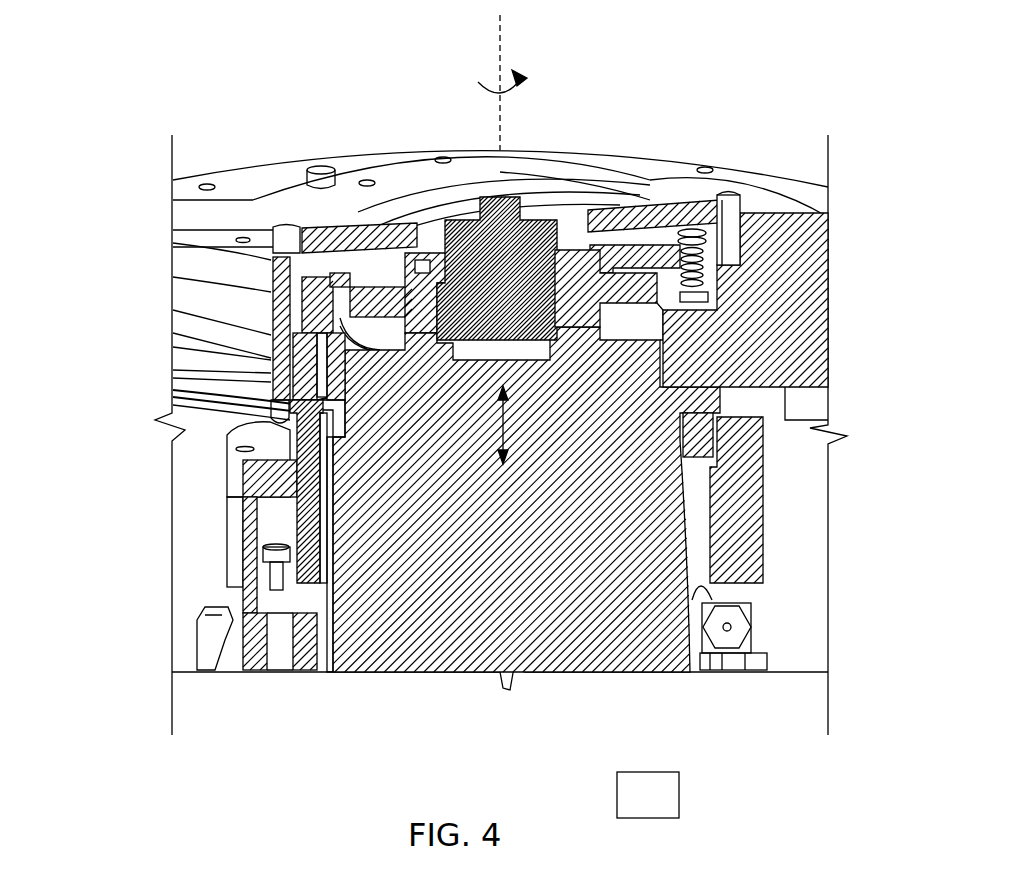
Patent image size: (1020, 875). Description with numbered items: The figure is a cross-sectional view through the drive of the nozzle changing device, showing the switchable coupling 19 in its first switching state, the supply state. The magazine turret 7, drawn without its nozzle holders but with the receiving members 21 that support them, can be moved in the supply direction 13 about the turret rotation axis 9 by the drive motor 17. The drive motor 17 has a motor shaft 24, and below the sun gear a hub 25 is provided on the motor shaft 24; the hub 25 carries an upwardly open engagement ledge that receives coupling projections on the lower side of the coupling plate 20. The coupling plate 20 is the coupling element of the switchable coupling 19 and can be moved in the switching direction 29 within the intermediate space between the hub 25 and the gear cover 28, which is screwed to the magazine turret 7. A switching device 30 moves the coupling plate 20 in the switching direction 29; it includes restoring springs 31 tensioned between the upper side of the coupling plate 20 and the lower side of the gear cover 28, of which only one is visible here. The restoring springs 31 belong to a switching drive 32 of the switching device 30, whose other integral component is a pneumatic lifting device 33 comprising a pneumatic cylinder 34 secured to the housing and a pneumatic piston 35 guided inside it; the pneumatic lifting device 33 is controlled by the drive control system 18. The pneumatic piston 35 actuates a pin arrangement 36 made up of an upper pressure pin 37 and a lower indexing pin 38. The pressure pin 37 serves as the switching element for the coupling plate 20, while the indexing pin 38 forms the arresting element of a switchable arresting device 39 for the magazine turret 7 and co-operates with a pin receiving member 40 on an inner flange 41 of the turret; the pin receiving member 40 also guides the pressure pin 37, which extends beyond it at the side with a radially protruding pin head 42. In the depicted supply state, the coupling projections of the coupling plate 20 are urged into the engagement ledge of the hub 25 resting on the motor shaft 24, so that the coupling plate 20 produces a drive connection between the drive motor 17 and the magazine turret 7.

The magazine turret 7 is at (298, 148).
The turret rotation axis 9 is at (500, 50).
The supply direction 13 is at (500, 97).
The drive motor 17 is at (520, 526).
The drive control system 18 is at (648, 795).
The switchable coupling 19 is at (700, 312).
The coupling plate 20 is at (285, 313).
The receiving members 21 is at (217, 210).
The motor shaft 24 is at (520, 288).
The hub 25 is at (627, 292).
The gear cover 28 is at (650, 192).
The switching direction 29 is at (510, 415).
The switching device 30 is at (262, 289).
The restoring springs 31 is at (728, 229).
The switching drive 32 is at (707, 242).
The pneumatic lifting device 33 is at (212, 533).
The pneumatic cylinder 34 is at (240, 556).
The pneumatic piston 35 is at (258, 582).
The pin arrangement 36 is at (350, 450).
The pressure pin 37 is at (320, 381).
The indexing pin 38 is at (227, 478).
The switchable arresting device 39 is at (345, 558).
The pin receiving member 40 is at (262, 400).
The inner flange 41 is at (297, 364).
The pin head 42 is at (322, 354).